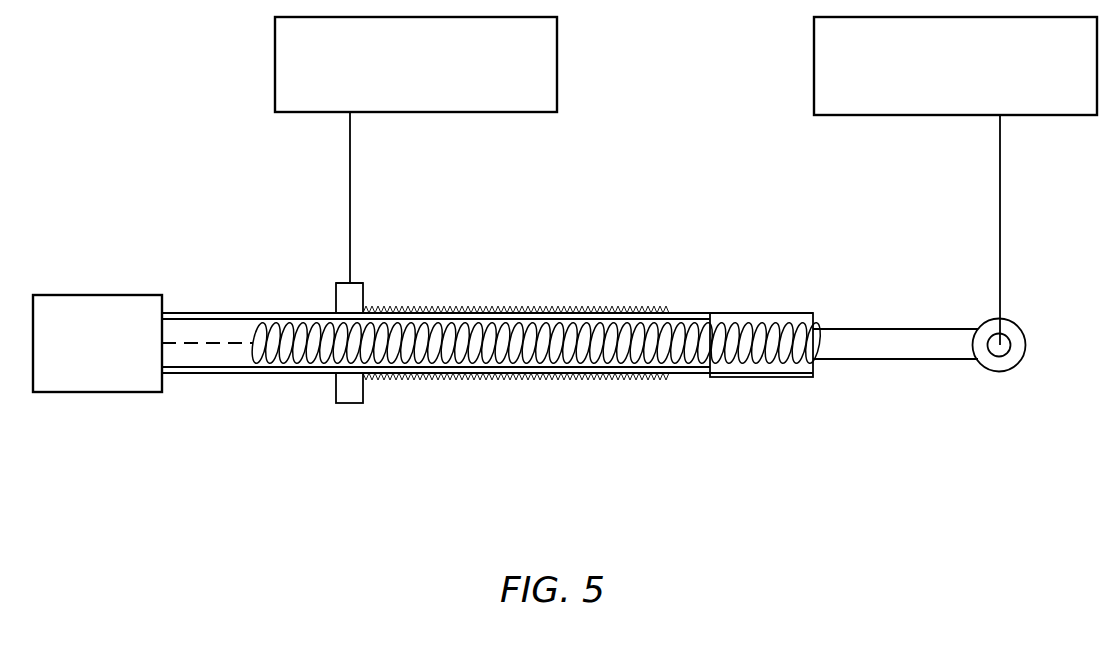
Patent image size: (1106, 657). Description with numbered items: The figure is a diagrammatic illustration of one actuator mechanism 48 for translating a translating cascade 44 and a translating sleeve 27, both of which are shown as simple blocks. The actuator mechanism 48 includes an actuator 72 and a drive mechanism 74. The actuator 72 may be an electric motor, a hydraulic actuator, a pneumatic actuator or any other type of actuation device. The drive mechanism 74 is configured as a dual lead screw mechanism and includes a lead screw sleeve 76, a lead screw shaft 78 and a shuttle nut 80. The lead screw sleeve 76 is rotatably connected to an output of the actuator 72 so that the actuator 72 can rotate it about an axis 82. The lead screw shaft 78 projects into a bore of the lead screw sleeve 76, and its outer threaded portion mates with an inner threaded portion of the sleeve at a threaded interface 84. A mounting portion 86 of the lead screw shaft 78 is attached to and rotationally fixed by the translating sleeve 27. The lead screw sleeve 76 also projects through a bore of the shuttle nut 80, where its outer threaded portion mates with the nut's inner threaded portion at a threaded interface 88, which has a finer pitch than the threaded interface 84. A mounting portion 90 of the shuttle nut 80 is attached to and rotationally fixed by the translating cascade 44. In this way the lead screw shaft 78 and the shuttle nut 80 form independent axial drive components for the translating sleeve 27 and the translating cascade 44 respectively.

The translating cascade 44 is at (400, 76).
The translating sleeve 27 is at (939, 76).
The actuator 72 is at (81, 359).
The drive mechanism 74 is at (483, 447).
The lead screw sleeve 76 is at (699, 310).
The lead screw shaft 78 is at (887, 328).
The shuttle nut 80 is at (366, 289).
The axis 82 is at (223, 311).
The threaded interface 84 is at (793, 315).
The mounting portion 86 is at (983, 373).
The threaded interface 88 is at (363, 379).
The mounting portion 90 is at (336, 285).
The actuator mechanism 48 is at (108, 466).